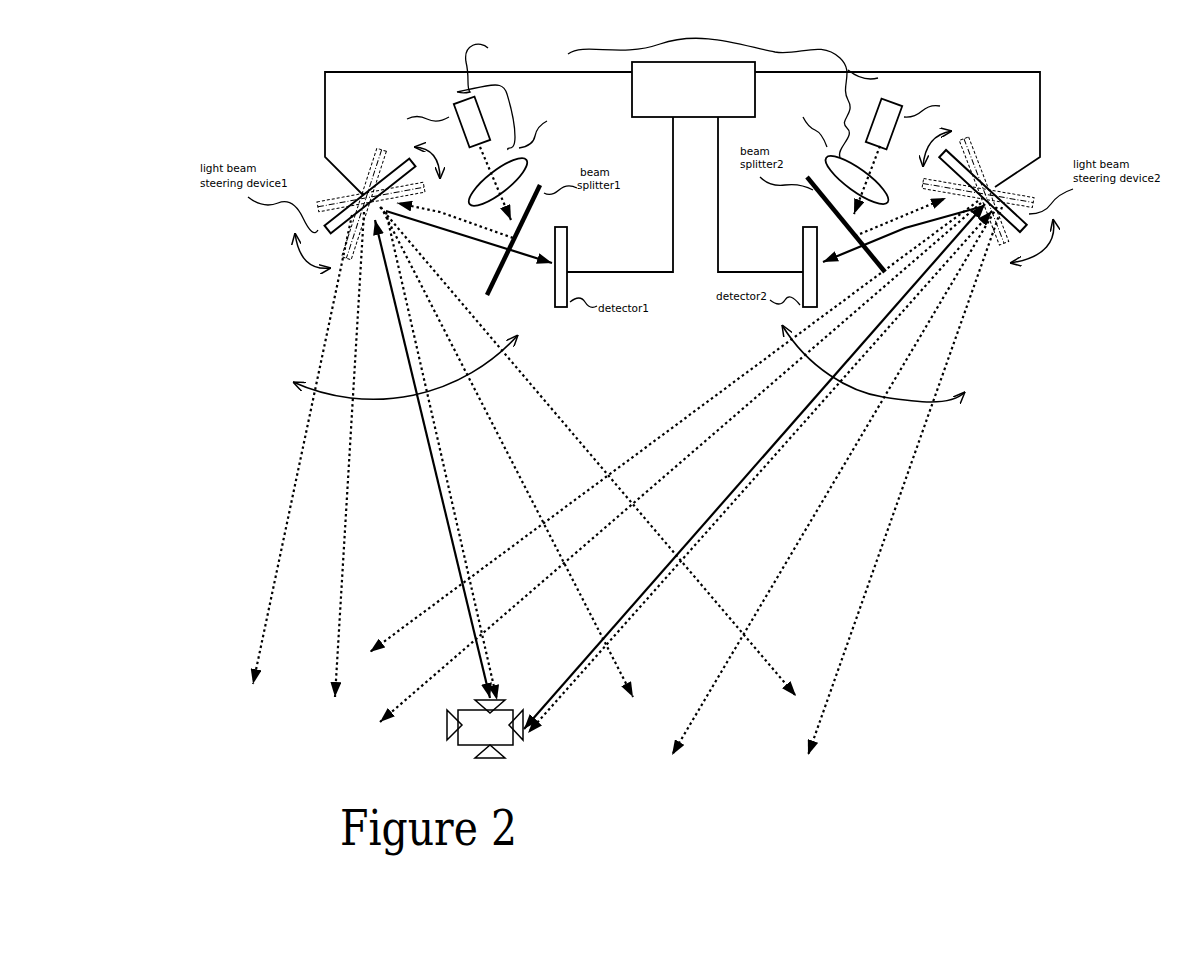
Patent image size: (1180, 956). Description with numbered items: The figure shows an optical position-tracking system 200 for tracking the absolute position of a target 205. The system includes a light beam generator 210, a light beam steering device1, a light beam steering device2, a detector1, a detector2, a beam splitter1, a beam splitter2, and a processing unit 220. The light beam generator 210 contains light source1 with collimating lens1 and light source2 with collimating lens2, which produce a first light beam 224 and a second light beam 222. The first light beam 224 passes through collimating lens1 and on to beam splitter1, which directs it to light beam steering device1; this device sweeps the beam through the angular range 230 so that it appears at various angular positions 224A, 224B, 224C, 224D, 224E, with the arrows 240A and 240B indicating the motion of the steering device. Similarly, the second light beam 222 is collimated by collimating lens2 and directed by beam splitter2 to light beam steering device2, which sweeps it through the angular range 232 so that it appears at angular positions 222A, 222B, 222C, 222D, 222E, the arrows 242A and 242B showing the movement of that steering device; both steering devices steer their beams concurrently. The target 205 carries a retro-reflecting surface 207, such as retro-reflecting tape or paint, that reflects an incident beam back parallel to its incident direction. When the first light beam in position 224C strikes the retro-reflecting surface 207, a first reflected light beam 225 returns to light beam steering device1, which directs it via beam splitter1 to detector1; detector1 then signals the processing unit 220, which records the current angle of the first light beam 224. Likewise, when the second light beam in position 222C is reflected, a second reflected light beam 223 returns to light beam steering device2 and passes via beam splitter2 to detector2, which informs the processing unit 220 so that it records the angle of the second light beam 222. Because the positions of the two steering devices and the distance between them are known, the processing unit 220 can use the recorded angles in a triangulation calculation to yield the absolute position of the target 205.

The optical position-tracking system 200 is at (1102, 91).
The target 205 is at (512, 747).
The retro-reflecting surface 207 is at (460, 745).
The light beam generator 210 is at (517, 55).
The processing unit 220 is at (716, 104).
The second light beam 222 is at (873, 165).
The second light beam at a first angular location 222A is at (676, 410).
The second light beam at a second angular location 222B is at (670, 466).
The second light beam at a third angular location 222C is at (738, 488).
The second light beam at a fourth angular location 222D is at (826, 533).
The second light beam at a fifth angular location 222E is at (886, 543).
The second reflected light beam 223 is at (879, 247).
The first light beam 224 is at (489, 163).
The first light beam at a first angular location 224A is at (282, 552).
The first light beam at a second angular location 224B is at (343, 562).
The first light beam at a third angular location 224C is at (457, 518).
The first light beam at a fourth angular location 224D is at (516, 474).
The first light beam at a fifth angular location 224E is at (566, 419).
The first reflected light beam 225 is at (439, 247).
The angular range 230 is at (298, 394).
The angular range 232 is at (950, 402).
The arrow 240A is at (300, 253).
The arrow 240B is at (434, 156).
The arrow 242A is at (944, 123).
The arrow 242B is at (1036, 257).